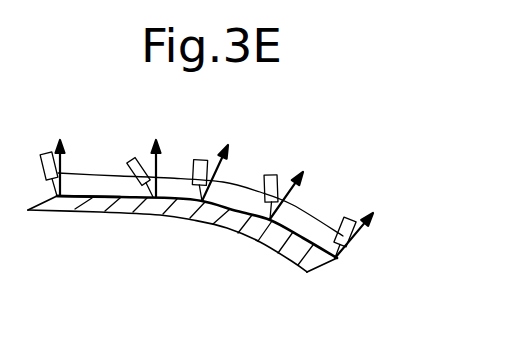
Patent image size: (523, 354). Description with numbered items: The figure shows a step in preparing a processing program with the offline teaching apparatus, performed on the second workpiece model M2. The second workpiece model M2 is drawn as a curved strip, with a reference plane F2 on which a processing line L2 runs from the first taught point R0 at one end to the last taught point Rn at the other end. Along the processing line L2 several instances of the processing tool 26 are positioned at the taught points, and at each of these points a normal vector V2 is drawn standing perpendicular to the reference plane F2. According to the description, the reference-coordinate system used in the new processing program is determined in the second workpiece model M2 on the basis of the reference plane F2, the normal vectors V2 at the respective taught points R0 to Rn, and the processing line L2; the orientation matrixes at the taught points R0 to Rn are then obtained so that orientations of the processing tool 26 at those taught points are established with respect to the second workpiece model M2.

The processing tool 26 is at (129, 160).
The normal vector V2 is at (222, 168).
The taught point R0 is at (57, 196).
The processing line L2 is at (97, 210).
The reference plane F2 is at (185, 208).
The second workpiece model M2 is at (221, 238).
The taught point Rn is at (336, 259).